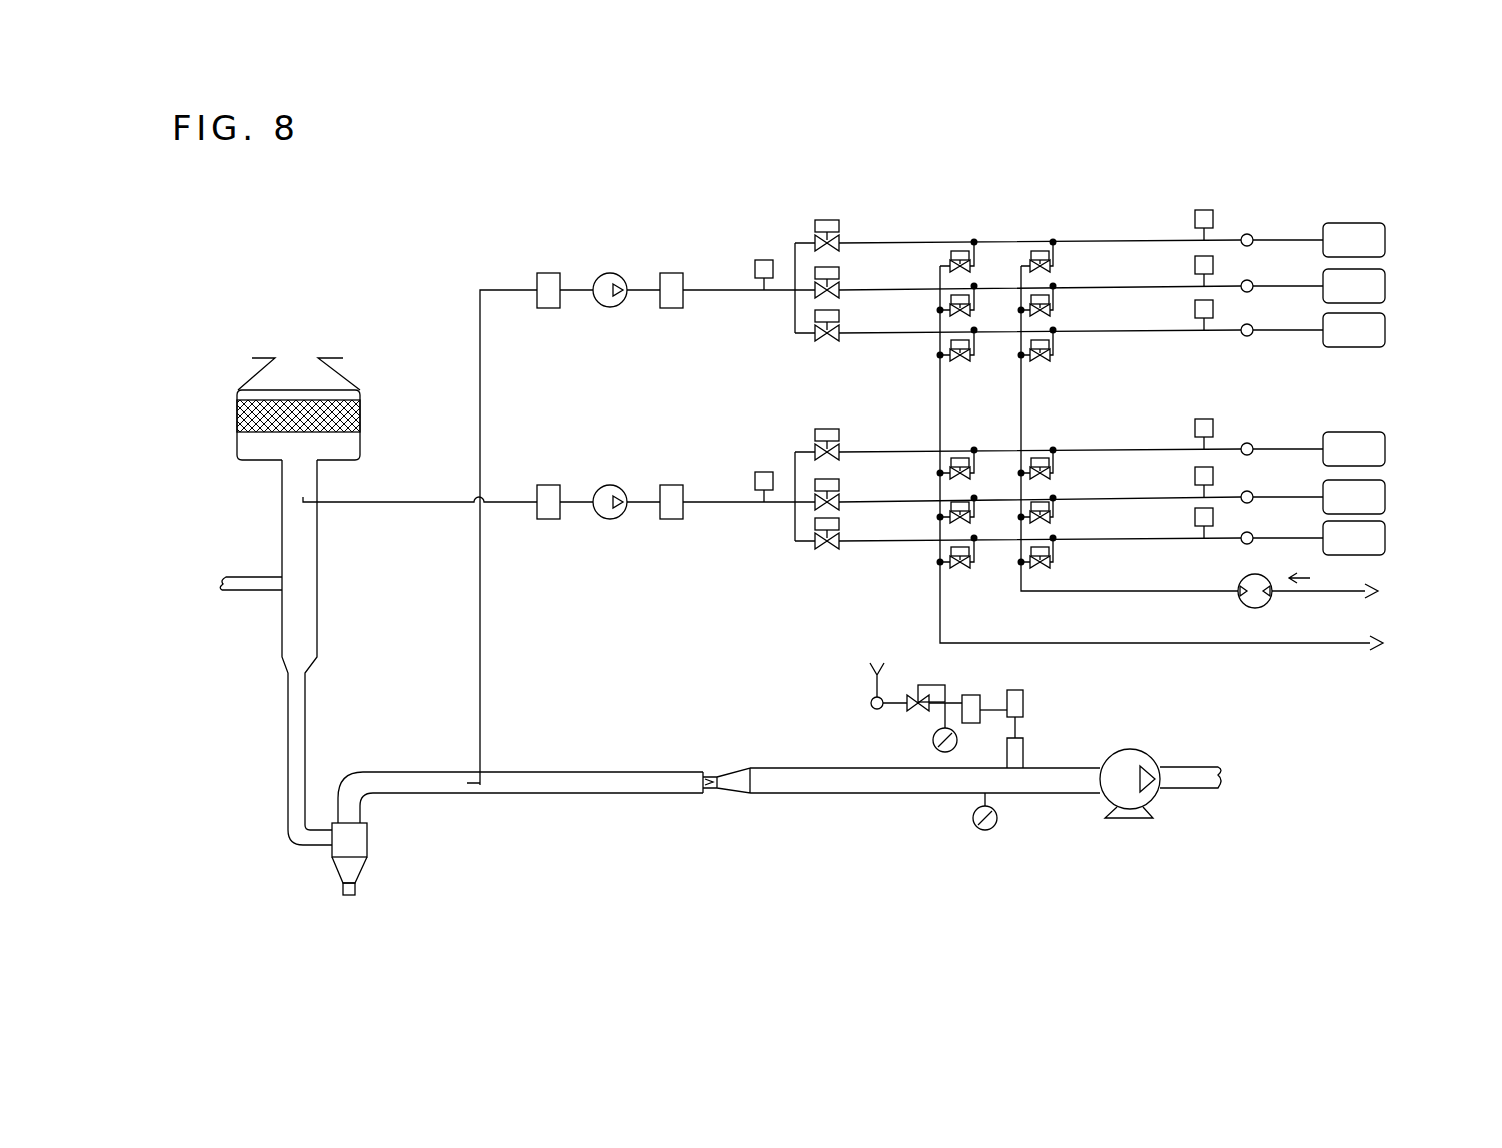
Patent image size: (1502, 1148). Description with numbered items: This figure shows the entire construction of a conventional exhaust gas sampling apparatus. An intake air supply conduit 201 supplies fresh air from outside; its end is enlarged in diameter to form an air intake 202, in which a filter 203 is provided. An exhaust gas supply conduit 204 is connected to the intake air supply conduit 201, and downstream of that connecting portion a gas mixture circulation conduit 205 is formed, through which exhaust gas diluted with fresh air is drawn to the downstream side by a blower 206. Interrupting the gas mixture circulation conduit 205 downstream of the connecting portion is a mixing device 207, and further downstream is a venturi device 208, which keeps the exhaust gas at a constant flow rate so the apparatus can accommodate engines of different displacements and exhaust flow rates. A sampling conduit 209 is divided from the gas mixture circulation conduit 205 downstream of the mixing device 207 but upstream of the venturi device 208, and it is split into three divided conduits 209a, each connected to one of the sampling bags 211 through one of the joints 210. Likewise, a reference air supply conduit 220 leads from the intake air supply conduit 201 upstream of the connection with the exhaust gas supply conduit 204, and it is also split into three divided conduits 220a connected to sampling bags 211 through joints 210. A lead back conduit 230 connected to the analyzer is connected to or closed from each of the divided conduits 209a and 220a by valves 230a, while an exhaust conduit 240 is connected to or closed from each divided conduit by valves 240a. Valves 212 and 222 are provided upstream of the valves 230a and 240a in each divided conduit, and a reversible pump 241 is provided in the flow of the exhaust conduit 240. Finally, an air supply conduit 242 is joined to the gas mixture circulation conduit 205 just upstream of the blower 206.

The intake air supply conduit 201 is at (306, 552).
The air intake 202 is at (320, 385).
The filter 203 is at (250, 418).
The exhaust gas supply conduit 204 is at (232, 576).
The gas mixture circulation conduit 205 is at (298, 742).
The blower 206 is at (1133, 748).
The mixing device 207 is at (358, 840).
The venturi device 208 is at (727, 800).
The sampling conduit 209 is at (482, 635).
The divided conduits 209a is at (862, 333).
The joints 210 is at (1252, 326).
The sampling bags 211 is at (1380, 328).
The valves 212 is at (816, 328).
The reference air supply conduit 220 is at (360, 502).
The divided conduits 220a is at (862, 541).
The valves 222 is at (816, 536).
The lead back conduit 230 is at (940, 610).
The valves 230a is at (962, 250).
The exhaust conduit 240 is at (1150, 590).
The valves 240a is at (1042, 250).
The reversible pump 241 is at (1242, 603).
The air supply conduit 242 is at (1023, 693).